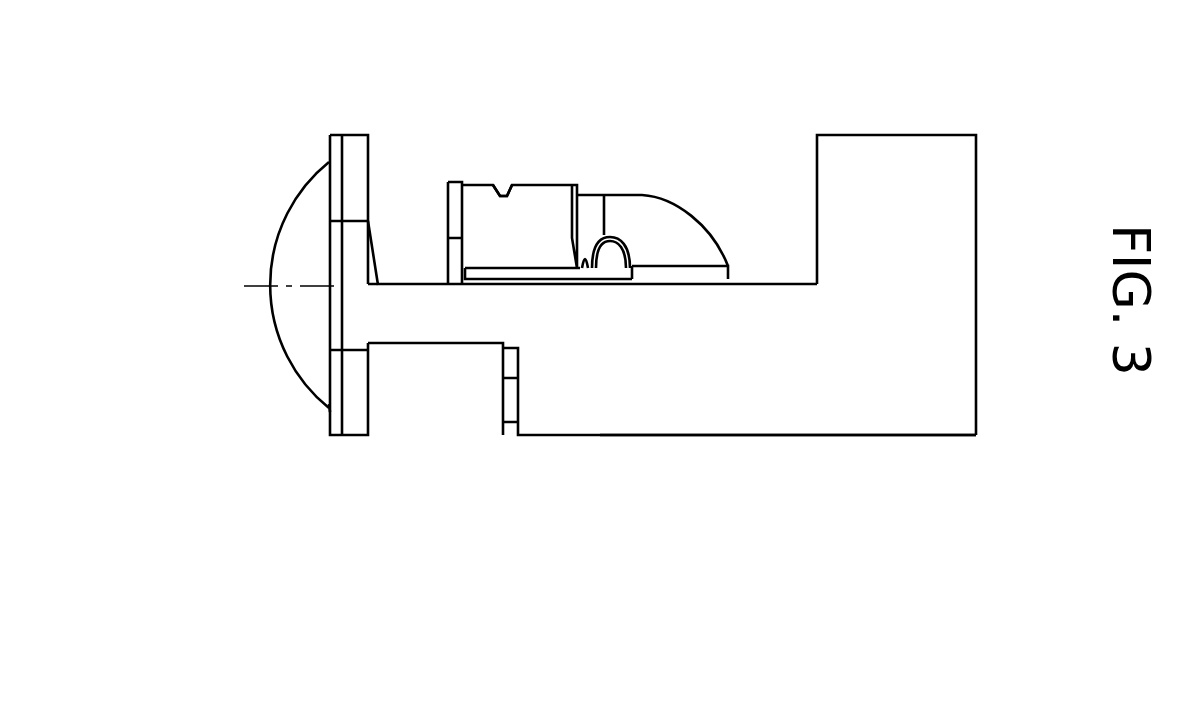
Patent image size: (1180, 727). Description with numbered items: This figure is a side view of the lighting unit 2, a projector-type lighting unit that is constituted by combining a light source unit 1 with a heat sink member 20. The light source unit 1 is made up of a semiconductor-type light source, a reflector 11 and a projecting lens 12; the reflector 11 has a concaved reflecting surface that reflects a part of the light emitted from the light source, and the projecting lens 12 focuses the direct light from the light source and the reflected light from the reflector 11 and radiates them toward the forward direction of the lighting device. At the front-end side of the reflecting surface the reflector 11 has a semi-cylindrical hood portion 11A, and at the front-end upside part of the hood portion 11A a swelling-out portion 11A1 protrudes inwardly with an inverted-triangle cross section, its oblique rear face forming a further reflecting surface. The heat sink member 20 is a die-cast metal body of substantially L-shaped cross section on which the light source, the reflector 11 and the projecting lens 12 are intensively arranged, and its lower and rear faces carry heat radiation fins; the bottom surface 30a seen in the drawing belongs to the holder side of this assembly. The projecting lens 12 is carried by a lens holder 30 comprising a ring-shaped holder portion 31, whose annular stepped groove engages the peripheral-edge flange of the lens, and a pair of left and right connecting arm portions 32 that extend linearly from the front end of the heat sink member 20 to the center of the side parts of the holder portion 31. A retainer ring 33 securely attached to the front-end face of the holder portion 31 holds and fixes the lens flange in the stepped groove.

The light source unit 1 is at (606, 180).
The lighting unit 2 is at (711, 142).
The reflector 11 is at (685, 205).
The hood portion 11A is at (545, 185).
The swelling-out portion 11A1 is at (503, 195).
The projecting lens 12 is at (272, 327).
The heat sink member 20 is at (903, 126).
The lens holder 30 is at (653, 353).
The bottom surface of lens holder 30a is at (840, 403).
The holder portion 31 is at (358, 427).
The connecting arm portions 32 is at (432, 325).
The retainer ring 33 is at (329, 415).